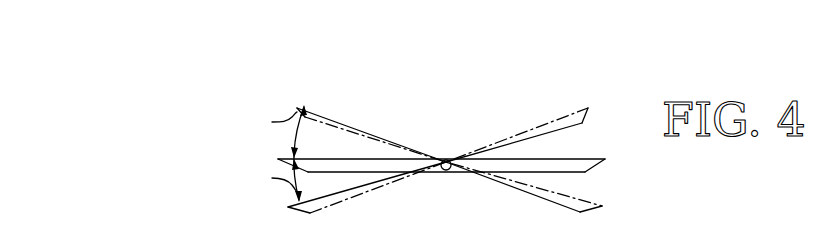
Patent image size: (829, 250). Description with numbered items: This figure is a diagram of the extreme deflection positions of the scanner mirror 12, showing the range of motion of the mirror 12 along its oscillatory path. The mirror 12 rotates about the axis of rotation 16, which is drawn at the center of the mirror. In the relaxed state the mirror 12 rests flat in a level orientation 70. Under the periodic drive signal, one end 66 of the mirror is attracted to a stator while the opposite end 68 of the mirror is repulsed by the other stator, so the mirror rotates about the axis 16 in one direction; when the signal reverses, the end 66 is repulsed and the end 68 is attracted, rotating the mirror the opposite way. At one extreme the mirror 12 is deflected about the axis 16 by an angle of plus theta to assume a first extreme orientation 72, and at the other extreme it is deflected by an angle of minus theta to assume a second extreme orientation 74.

The mirror 12 is at (584, 81).
The axis of rotation 16 is at (445, 159).
The end of the mirror 66 is at (293, 158).
The opposite end of the mirror 68 is at (588, 160).
The level orientation 70 is at (605, 159).
The first extreme orientation 72 is at (583, 212).
The second extreme orientation 74 is at (583, 122).